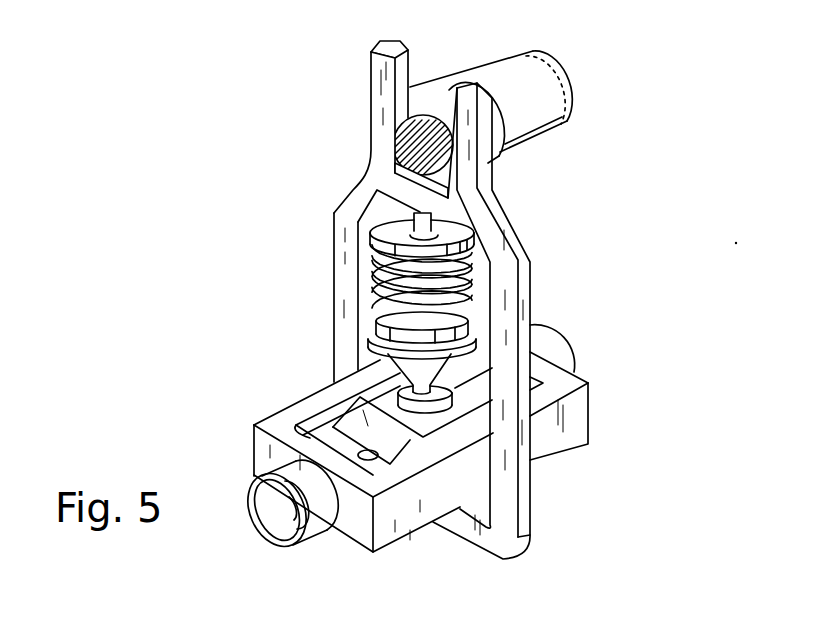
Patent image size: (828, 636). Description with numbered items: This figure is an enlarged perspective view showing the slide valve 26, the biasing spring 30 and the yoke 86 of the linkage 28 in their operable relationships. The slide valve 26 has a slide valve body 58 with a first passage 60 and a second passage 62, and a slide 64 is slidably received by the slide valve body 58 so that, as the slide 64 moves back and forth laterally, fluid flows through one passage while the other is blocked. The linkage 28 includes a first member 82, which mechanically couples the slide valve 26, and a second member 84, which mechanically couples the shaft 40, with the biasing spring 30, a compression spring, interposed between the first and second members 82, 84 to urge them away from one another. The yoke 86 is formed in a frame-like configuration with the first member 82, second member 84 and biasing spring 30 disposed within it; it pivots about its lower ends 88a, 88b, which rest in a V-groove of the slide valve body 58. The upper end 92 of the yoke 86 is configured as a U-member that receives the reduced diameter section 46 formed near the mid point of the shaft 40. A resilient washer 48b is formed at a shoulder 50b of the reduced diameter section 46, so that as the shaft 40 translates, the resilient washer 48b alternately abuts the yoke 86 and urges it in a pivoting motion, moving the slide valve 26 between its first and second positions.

The slide valve 26 is at (256, 379).
The linkage 28 is at (253, 144).
The biasing spring 30 is at (376, 278).
The shaft 40 is at (503, 60).
The reduced diameter section 46 is at (430, 112).
The resilient washer 48b is at (510, 143).
The shoulder 50b is at (550, 137).
The slide valve body 58 is at (398, 528).
The first passage 60 is at (275, 530).
The second passage 62 is at (584, 313).
The slide 64 is at (367, 431).
The first member 82 is at (396, 328).
The second member 84 is at (406, 240).
The yoke 86 is at (352, 190).
The lower end of yoke 88a is at (337, 316).
The lower end of yoke 88b is at (508, 505).
The upper end of yoke 92 is at (380, 124).